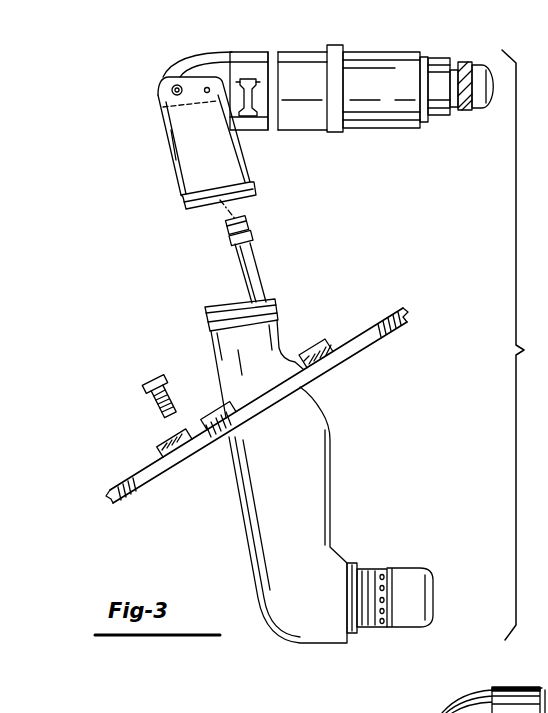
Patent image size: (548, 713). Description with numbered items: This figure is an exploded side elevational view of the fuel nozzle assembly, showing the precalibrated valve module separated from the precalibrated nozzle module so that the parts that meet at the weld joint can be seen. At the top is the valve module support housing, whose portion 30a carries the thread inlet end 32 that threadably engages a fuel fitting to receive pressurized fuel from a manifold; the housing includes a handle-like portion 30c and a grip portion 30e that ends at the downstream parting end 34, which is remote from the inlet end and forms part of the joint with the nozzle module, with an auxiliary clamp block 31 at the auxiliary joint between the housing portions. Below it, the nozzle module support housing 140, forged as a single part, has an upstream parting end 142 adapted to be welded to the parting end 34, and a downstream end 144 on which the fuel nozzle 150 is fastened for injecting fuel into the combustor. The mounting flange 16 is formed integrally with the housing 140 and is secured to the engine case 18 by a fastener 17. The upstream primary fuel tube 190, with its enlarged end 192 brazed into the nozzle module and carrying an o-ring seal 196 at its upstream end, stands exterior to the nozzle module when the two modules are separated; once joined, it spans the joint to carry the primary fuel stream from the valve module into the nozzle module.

The support housing portion 30a is at (378, 80).
The handle portion of housing 30c is at (196, 58).
The grip portion of handle 30e is at (196, 165).
The clamp block 31 is at (276, 50).
The thread inlet end 32 is at (470, 64).
The downstream parting end 34 is at (199, 205).
The o-ring seal 196 is at (246, 219).
The enlarged end of primary fuel tube 192 is at (253, 242).
The upstream primary fuel tube 190 is at (262, 272).
The upstream parting end 142 is at (206, 313).
The nozzle module support housing 140 is at (348, 497).
The downstream end 144 is at (357, 633).
The fuel nozzle 150 is at (413, 563).
The mounting flange 16 is at (311, 342).
The case 18 is at (358, 345).
The fastener 17 is at (150, 405).